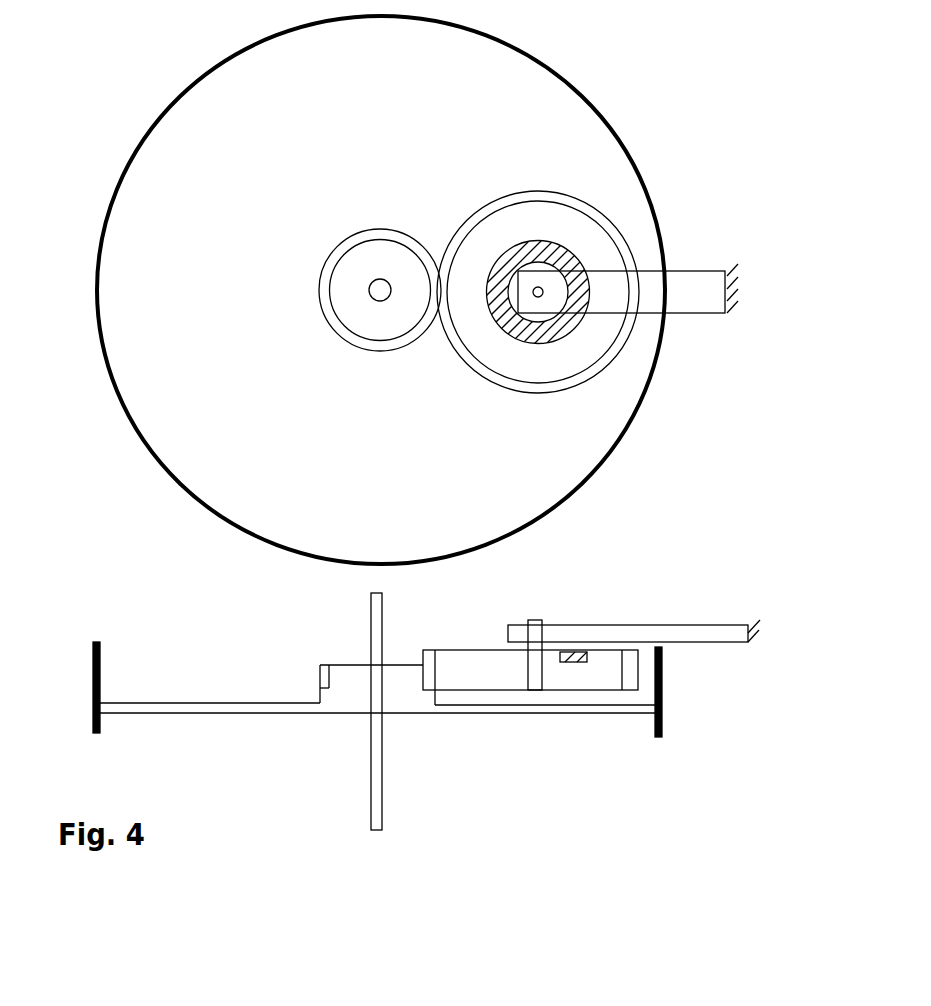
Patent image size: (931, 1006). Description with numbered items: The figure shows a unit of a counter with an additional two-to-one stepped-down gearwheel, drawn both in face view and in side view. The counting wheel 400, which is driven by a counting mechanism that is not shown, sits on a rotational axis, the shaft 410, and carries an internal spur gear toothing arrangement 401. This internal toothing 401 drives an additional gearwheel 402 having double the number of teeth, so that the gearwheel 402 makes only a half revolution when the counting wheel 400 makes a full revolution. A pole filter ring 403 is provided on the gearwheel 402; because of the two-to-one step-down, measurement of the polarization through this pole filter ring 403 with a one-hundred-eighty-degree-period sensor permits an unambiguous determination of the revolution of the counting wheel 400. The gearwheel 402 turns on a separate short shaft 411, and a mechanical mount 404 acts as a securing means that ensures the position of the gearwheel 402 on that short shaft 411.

The counting wheel 400 is at (183, 497).
The internal spur gear toothing arrangement 401 is at (323, 663).
The additional gearwheel with double the number of teeth 402 is at (475, 650).
The pole filter ring on the gearwheel 403 is at (575, 653).
The mechanical mount 404 is at (678, 283).
The shaft 410 is at (370, 289).
The short shaft for the additional gearwheel 411 is at (534, 285).